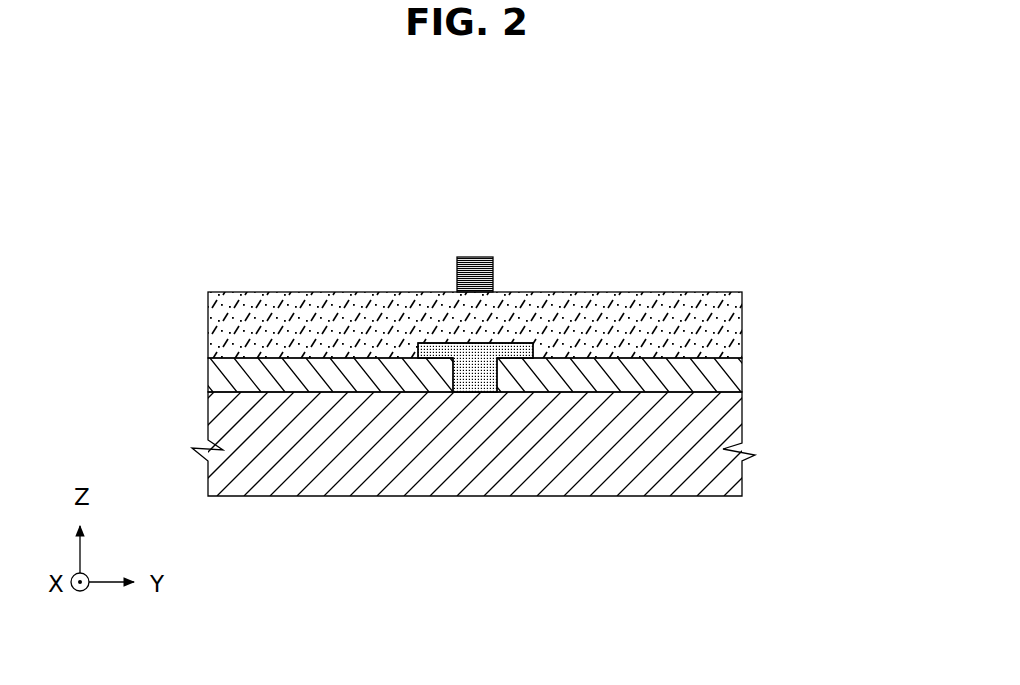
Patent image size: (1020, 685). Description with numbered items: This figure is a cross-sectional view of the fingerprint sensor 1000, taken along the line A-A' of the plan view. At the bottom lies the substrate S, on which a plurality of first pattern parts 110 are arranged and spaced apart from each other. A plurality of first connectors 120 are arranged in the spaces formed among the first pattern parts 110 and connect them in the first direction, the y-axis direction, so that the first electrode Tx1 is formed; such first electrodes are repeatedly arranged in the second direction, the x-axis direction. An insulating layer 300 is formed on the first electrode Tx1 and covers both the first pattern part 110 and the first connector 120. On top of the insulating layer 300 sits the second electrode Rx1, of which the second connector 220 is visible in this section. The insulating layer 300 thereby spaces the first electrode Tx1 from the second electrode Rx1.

The capacitive sensor / touch sensing device 1000 is at (563, 182).
The second connector 220 is at (494, 271).
The insulating layer 300 is at (728, 318).
The first pattern part 110 is at (730, 372).
The first connector 120 is at (475, 380).
The substrate S is at (728, 425).
The second electrode Rx1 is at (446, 314).
The first electrode Tx1 is at (446, 375).